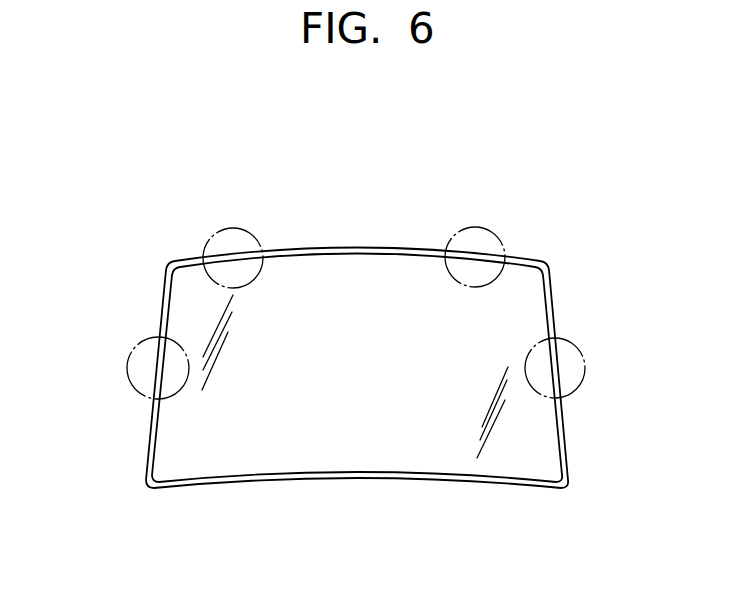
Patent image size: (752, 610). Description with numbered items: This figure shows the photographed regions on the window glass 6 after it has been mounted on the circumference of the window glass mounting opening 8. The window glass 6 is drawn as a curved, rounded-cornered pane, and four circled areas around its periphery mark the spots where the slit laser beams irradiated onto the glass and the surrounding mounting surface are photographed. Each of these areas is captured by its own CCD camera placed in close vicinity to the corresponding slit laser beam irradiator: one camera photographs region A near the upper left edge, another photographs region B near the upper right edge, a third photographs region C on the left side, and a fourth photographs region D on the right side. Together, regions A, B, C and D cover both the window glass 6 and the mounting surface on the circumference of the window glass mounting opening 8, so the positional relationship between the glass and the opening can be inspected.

The window glass 6 is at (523, 318).
The window glass mounting opening 8 is at (422, 477).
The region A is at (237, 228).
The region B is at (477, 228).
The region C is at (128, 353).
The region D is at (587, 362).